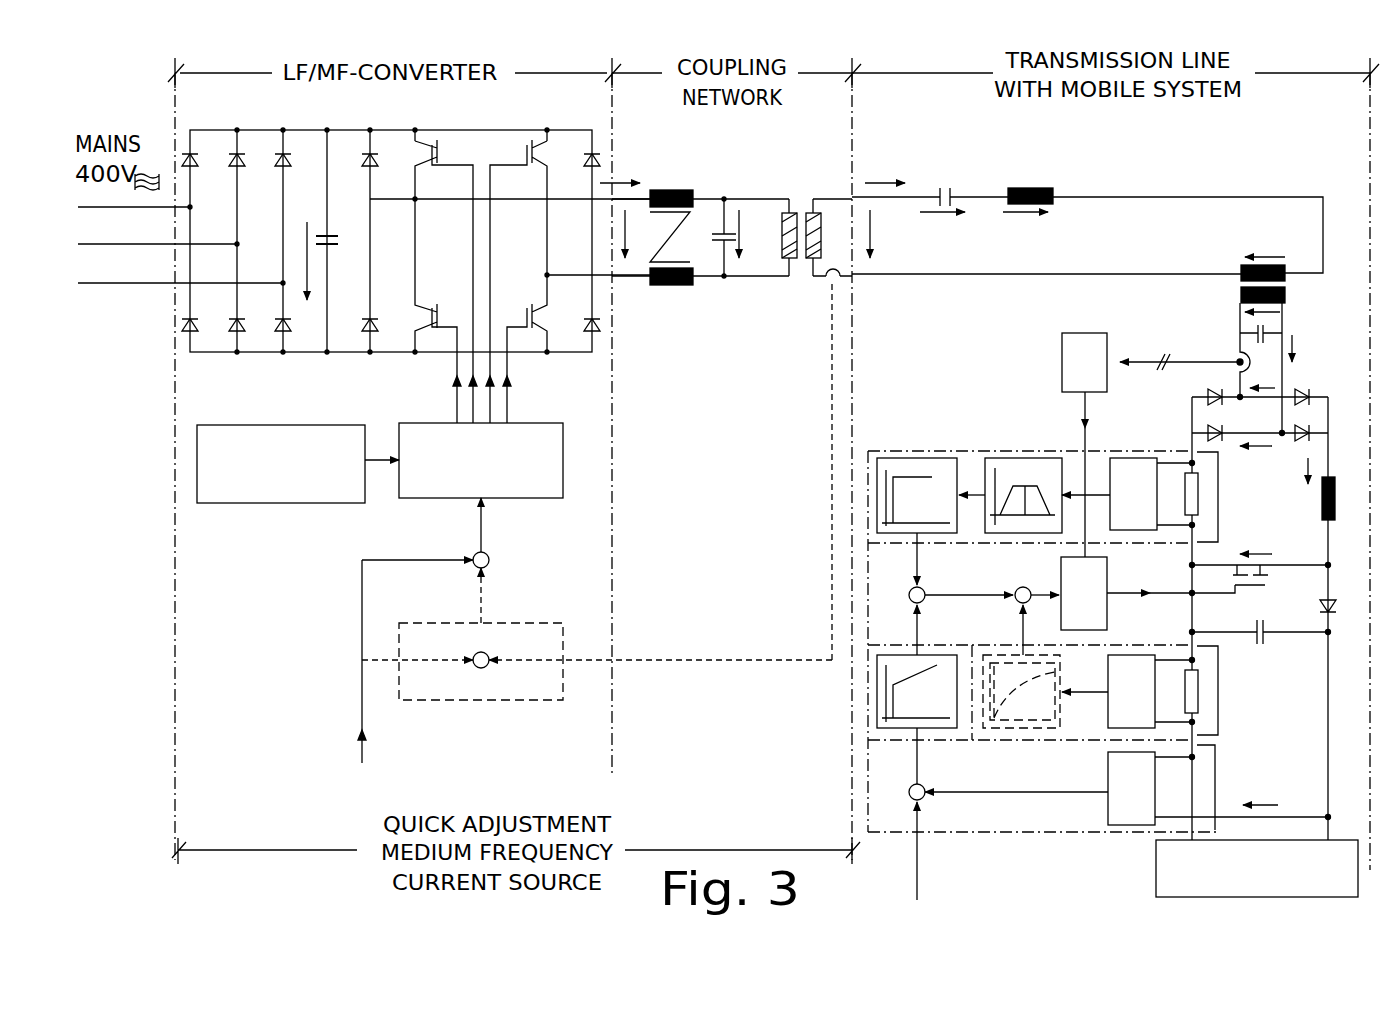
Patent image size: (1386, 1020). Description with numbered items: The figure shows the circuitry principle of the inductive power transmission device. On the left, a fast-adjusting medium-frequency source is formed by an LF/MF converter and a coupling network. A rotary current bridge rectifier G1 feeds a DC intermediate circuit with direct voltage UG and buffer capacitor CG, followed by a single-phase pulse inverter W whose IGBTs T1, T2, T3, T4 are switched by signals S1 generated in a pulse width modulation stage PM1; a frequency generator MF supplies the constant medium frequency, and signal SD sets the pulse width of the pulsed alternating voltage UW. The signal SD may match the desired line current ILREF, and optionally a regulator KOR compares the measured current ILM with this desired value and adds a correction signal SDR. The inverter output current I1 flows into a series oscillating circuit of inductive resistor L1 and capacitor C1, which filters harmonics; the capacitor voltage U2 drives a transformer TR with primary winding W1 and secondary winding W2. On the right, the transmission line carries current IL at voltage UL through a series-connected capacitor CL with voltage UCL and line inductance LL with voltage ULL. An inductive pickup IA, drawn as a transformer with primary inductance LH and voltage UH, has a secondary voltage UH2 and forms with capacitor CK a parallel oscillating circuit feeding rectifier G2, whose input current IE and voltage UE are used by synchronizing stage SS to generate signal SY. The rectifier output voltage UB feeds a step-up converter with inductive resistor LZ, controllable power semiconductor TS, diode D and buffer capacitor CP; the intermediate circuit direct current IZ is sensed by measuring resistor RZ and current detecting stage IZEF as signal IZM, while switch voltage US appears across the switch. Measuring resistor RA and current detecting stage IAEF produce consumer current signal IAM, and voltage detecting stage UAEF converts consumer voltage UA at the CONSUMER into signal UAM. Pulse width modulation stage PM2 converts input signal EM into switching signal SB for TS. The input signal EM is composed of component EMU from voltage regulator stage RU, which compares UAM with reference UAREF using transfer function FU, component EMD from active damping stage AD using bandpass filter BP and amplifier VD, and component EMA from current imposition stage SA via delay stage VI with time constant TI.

The rotary current bridge rectifier G1 is at (188, 117).
The buffer capacitor CG is at (337, 261).
The direct voltage UG is at (306, 247).
The single-phase pulse inverter W is at (370, 112).
The IGBT T1 is at (444, 281).
The IGBT T2 is at (518, 281).
The IGBT T3 is at (436, 311).
The IGBT T4 is at (525, 311).
The switching signals S1 is at (440, 379).
The frequency generator MF is at (298, 464).
The pulse width modulation stage PM1 is at (481, 460).
The pulse width control signal SD is at (439, 630).
The correction signal SDR is at (508, 595).
The regulator KOR is at (597, 661).
The desired value of transmission conductor current ILREF is at (407, 752).
The measured transmission conductor current ILM is at (760, 464).
The inverter output current I1 is at (620, 168).
The inductive resistor L1 is at (671, 223).
The pulsed alternating voltage UW is at (643, 234).
The capacitor C1 is at (716, 237).
The capacitor voltage U2 is at (754, 234).
The transformer TR is at (789, 198).
The primary winding W1 is at (782, 230).
The secondary winding W2 is at (821, 240).
The transmission conductor current IL is at (885, 168).
The transmission line voltage UL is at (885, 234).
The series-connected capacitor CL is at (943, 182).
The series capacitor voltage UCL is at (942, 233).
The transmission line inductance LL is at (1030, 179).
The transmission line inductance voltage ULL is at (1025, 233).
The inductive pickup primary inductance LH is at (1240, 270).
The pickup voltage UH is at (1264, 240).
The inductive pickup IA is at (1308, 296).
The secondary pickup voltage UH2 is at (1268, 316).
The capacitor CK is at (1234, 332).
The medium-frequency input current IE is at (1300, 352).
The input voltage UE is at (1262, 390).
The synchronizing stage SS is at (1150, 362).
The synchronizing signal SY is at (1107, 474).
The rectifier G2 is at (1260, 477).
The rectifier output voltage UB is at (1254, 463).
The intermediate circuit direct current IZ is at (1296, 471).
The inductive resistor of step-up converter LZ is at (1308, 504).
The measuring resistor RZ is at (1197, 497).
The current detecting stage IZEF is at (1152, 494).
The intermediate circuit current signal IZM is at (1086, 481).
The switch voltage US is at (1254, 536).
The controllable power semiconductor TS is at (1260, 582).
The diode D is at (1335, 598).
The buffer capacitor CP is at (1260, 624).
The measuring resistor RA is at (1197, 695).
The current detecting stage IAEF is at (1151, 691).
The consumer current signal IAM is at (1085, 678).
The voltage detecting stage UAEF is at (1219, 788).
The consumer voltage UA is at (1259, 789).
The consumer CONSUMER is at (1257, 868).
The active damping stage AD is at (970, 468).
The amplifier VD is at (917, 495).
The bandpass filter BP is at (1010, 495).
The damping signal component EMD is at (912, 580).
The input signal EM is at (1050, 588).
The voltage regulator signal component EMU is at (912, 630).
The current imposition signal component EMA is at (1018, 648).
The pulse width modulation stage PM2 is at (1126, 593).
The switching signal SB is at (1146, 566).
The current imposition stage SA is at (1097, 650).
The transfer function FU is at (917, 691).
The delay stage time constant TI is at (1021, 691).
The delay stage VI is at (1045, 722).
The voltage measuring signal UAM is at (1000, 774).
The desired output voltage UAREF is at (953, 853).
The voltage regulator stage RU is at (1015, 805).